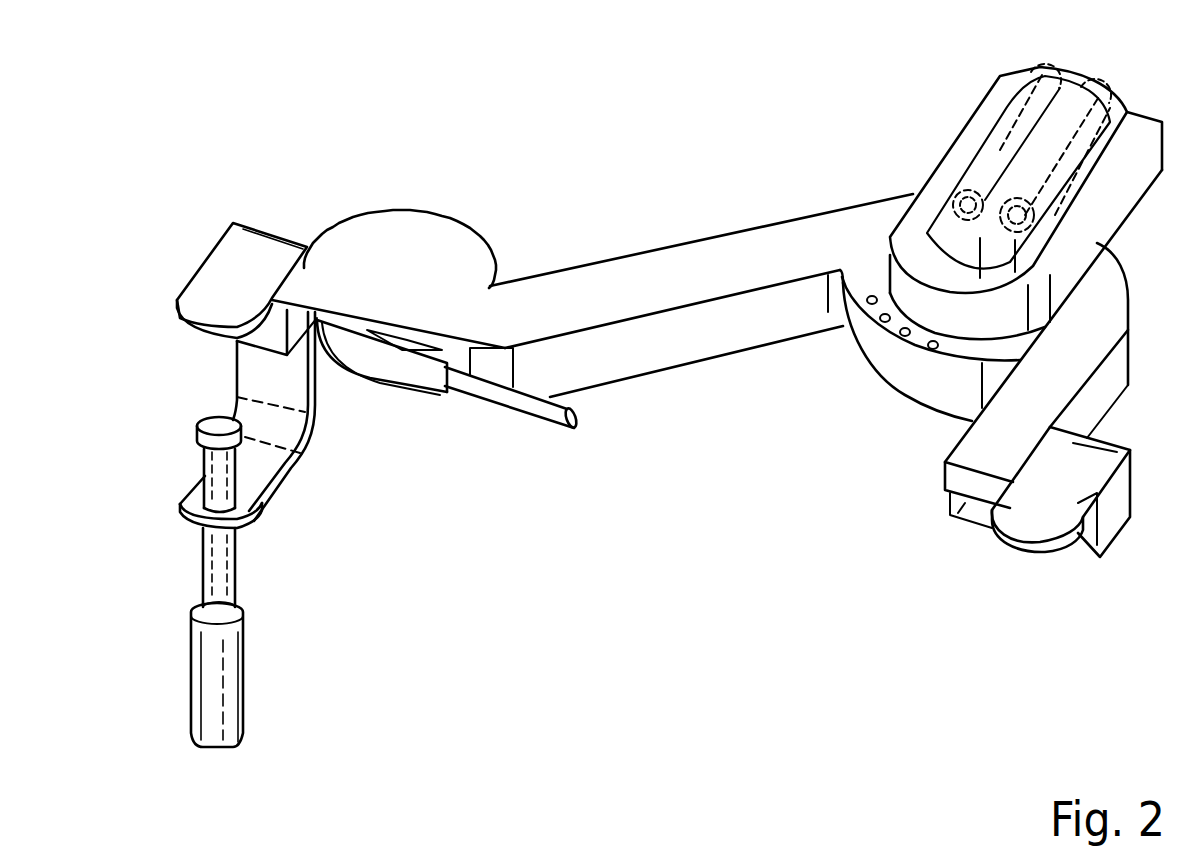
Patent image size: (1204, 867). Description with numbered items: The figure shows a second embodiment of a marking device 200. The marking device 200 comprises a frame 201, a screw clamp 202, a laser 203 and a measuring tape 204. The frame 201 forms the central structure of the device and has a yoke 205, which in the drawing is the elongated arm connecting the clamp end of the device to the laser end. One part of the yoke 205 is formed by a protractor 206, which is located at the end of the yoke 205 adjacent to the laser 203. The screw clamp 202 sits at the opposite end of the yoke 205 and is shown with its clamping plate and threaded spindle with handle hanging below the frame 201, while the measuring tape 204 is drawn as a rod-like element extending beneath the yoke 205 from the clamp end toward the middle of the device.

The marking device 200 is at (511, 148).
The frame 201 is at (950, 515).
The screw clamp 202 is at (266, 257).
The laser 203 is at (945, 235).
The measuring tape 204 is at (388, 360).
The yoke 205 is at (672, 340).
The protractor 206 is at (933, 386).